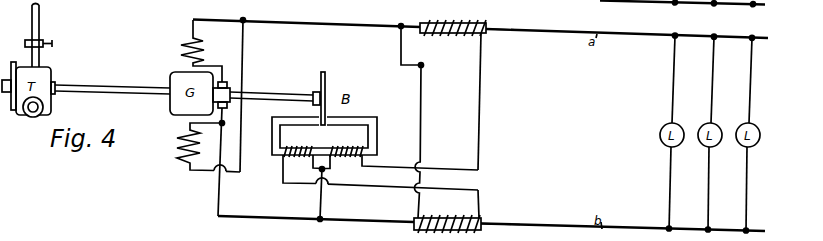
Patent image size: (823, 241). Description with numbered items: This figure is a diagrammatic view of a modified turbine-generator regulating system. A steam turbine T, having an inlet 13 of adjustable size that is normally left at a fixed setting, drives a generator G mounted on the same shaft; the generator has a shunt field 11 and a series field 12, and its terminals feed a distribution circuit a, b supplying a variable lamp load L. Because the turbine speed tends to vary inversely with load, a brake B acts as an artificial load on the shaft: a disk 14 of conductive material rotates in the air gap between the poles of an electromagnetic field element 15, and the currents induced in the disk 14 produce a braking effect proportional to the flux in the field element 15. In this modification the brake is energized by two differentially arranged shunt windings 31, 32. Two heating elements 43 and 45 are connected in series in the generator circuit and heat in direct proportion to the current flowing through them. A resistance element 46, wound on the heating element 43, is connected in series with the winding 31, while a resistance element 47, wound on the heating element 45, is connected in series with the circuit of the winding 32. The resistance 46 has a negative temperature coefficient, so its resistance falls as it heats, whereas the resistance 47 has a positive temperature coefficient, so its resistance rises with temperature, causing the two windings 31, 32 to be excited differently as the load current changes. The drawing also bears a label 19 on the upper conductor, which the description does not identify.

The shunt field 11 is at (178, 142).
The series field 12 is at (178, 49).
The inlet 13 is at (38, 23).
The disk 14 is at (326, 81).
The electromagnetic field element 15 is at (324, 136).
The conductor 19 is at (480, 19).
The shunt energizing winding 31 is at (380, 168).
The shunt energizing winding 32 is at (404, 164).
The heating element 43 is at (483, 221).
The heating element 45 is at (488, 34).
The resistance element 46 is at (451, 218).
The resistance element 47 is at (452, 34).